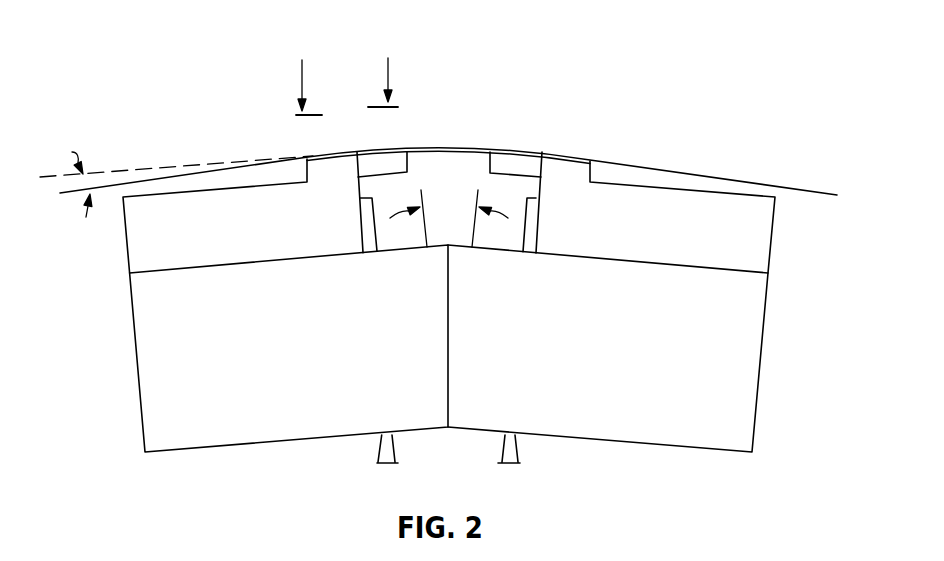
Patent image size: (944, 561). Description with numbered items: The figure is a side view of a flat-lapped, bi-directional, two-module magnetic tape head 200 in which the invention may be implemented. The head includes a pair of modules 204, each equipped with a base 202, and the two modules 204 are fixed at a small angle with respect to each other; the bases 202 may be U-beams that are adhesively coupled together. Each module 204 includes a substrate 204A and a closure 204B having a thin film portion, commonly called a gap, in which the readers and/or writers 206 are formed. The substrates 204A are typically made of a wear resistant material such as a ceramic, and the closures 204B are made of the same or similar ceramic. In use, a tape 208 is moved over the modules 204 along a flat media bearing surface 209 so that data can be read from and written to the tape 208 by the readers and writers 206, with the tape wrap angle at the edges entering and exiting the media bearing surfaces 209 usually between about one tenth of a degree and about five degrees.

The magnetic tape head 200 is at (175, 106).
The base 202 is at (135, 342).
The module 204 is at (60, 289).
The substrate 204A is at (187, 220).
The closure 204B is at (492, 163).
The readers and/or writers 206 is at (361, 140).
The tape 208 is at (687, 170).
The media bearing surface 209 is at (309, 144).